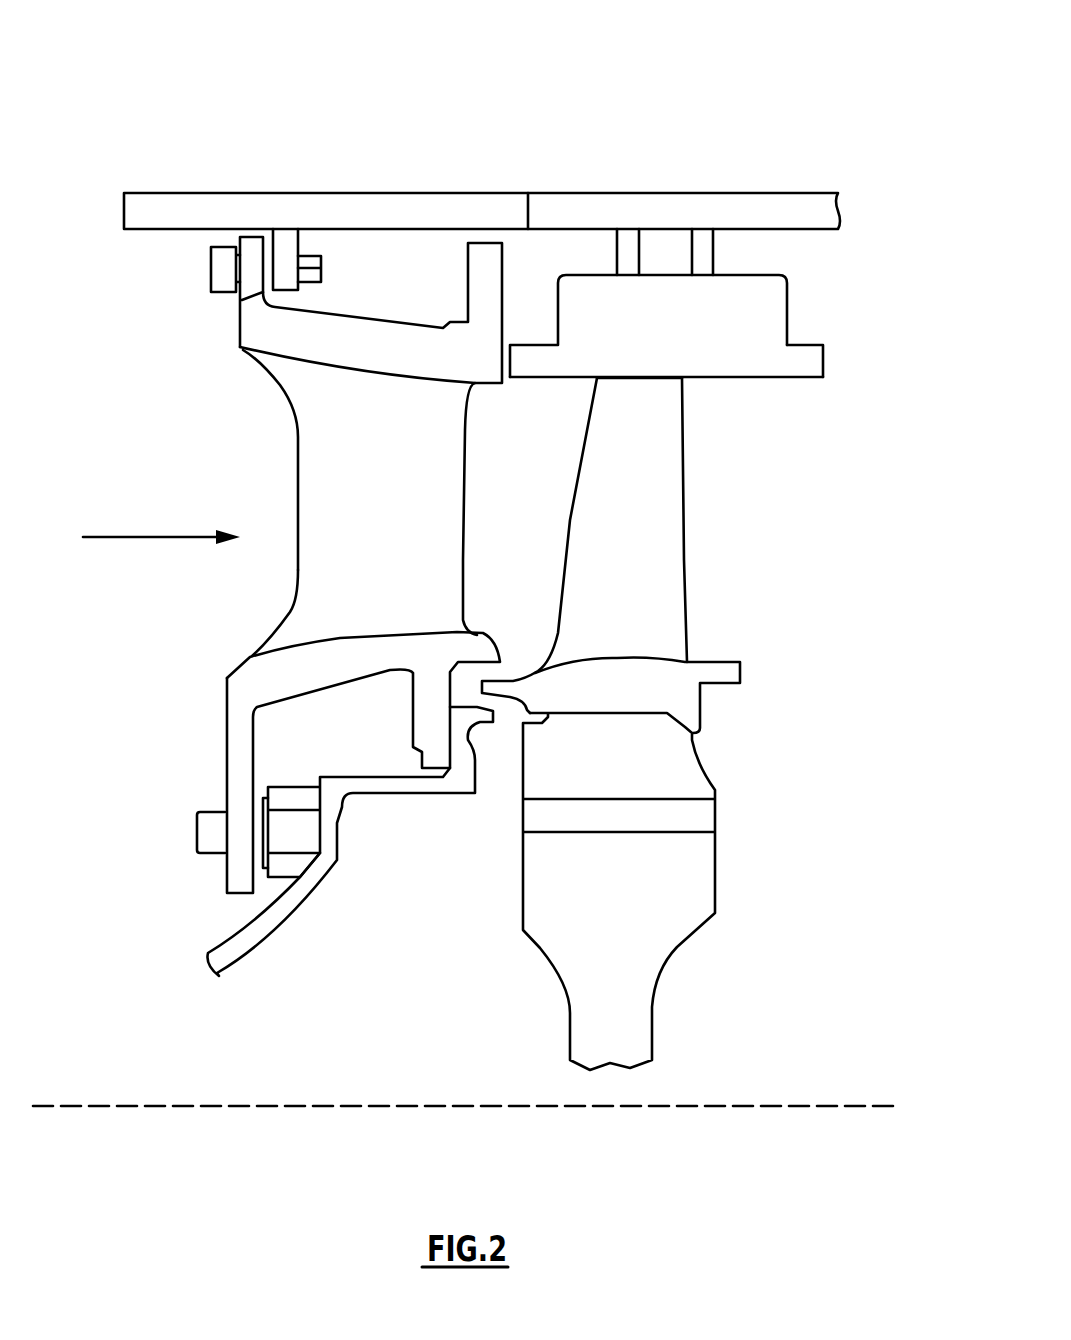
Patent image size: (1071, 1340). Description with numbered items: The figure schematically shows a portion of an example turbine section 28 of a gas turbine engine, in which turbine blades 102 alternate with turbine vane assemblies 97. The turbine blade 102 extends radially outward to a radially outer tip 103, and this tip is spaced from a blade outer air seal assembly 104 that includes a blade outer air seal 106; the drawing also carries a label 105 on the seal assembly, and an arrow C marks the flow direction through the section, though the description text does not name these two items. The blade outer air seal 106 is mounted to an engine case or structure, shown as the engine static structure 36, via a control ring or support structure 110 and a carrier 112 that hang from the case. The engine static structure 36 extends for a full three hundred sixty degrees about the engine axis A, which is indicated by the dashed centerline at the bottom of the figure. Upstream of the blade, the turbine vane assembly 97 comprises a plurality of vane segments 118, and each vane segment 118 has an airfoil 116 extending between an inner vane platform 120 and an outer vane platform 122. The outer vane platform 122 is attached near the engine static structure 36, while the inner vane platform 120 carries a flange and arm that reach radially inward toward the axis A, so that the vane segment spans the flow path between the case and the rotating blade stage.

The turbine section 28 is at (764, 80).
The engine static structure 36 is at (188, 210).
The turbine vane assembly 97 is at (160, 314).
The turbine blade 102 is at (670, 498).
The radially outer tip 103 is at (665, 380).
The blade outer air seal assembly 104 is at (840, 294).
The seal flange 105 is at (809, 350).
The blade outer air seal 106 is at (807, 366).
The support structure 110 is at (572, 205).
The carrier 112 is at (628, 253).
The airfoil 116 is at (300, 477).
The vane segment 118 is at (300, 607).
The inner vane platform 120 is at (253, 685).
The outer vane platform 122 is at (248, 338).
The core flow path direction C is at (113, 537).
The engine axis A is at (833, 1107).